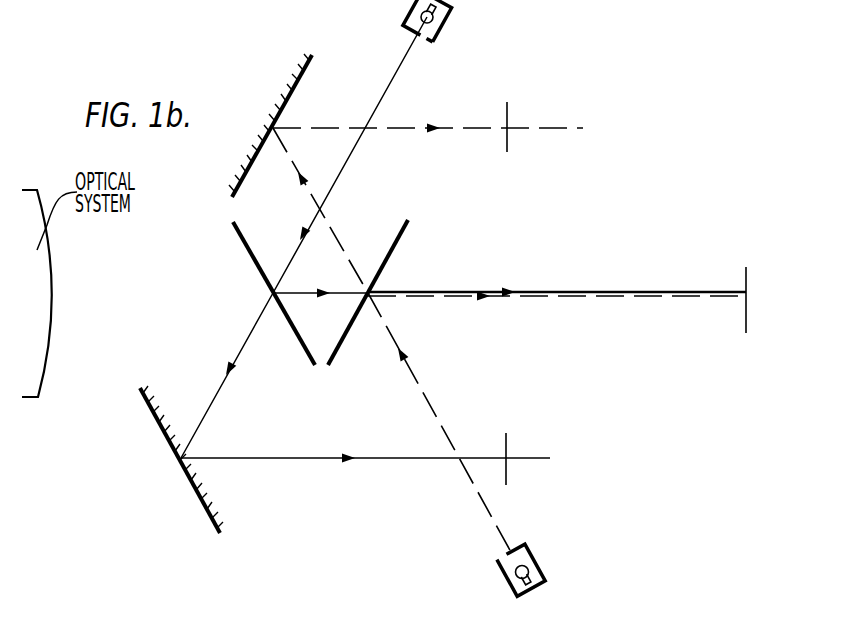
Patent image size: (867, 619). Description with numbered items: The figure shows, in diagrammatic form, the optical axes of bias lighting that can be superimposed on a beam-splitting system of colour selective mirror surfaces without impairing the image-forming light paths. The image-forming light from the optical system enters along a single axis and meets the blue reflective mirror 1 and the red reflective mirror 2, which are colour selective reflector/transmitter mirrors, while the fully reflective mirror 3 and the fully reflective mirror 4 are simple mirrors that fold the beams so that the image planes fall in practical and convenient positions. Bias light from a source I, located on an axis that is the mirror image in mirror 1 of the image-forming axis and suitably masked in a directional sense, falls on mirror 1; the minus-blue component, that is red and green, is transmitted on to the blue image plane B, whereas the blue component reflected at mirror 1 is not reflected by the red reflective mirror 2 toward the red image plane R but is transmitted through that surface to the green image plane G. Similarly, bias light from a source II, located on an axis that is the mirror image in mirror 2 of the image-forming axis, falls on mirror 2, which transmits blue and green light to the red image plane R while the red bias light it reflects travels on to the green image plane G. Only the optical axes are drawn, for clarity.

The blue reflective mirror 1 is at (253, 252).
The red reflective mirror 2 is at (382, 260).
The fully reflective mirror 3 is at (297, 83).
The fully reflective mirror 4 is at (158, 417).
The light source I is at (432, 24).
The light source II is at (530, 565).
The red image plane R is at (506, 115).
The green image plane G is at (746, 288).
The blue image plane B is at (505, 447).